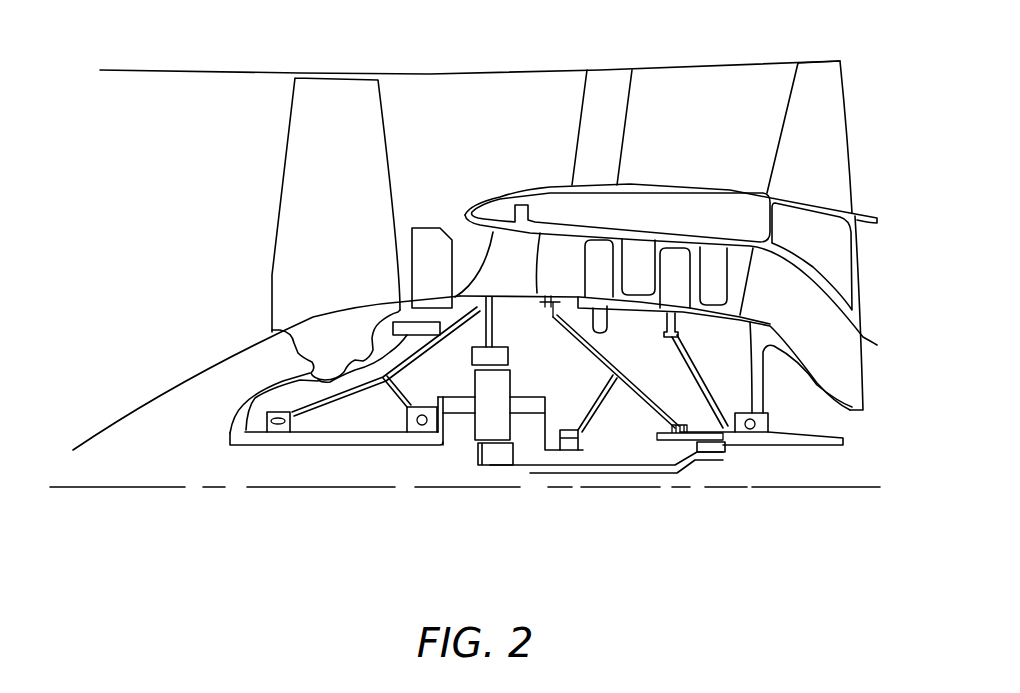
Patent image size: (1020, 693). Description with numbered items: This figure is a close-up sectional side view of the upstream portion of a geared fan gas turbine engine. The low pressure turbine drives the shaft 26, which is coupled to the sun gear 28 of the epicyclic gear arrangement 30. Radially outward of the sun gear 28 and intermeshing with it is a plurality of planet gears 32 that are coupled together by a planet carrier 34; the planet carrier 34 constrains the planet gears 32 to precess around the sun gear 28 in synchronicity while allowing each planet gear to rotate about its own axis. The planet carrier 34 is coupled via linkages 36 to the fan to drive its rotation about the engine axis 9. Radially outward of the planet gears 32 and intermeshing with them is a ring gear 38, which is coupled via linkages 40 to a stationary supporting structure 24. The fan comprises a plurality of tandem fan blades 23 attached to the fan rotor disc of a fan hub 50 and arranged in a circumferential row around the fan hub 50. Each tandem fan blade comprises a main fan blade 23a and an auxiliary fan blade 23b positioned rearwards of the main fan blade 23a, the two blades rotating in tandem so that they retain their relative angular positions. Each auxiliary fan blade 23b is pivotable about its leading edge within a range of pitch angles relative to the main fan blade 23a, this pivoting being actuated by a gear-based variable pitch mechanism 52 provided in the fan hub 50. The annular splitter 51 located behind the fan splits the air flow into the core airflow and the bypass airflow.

The engine axis 9 is at (165, 488).
The tandem fan blades 23 is at (170, 185).
The main fan blade 23a is at (308, 203).
The auxiliary fan blade 23b is at (418, 250).
The stationary supporting structure 24 is at (521, 272).
The shaft 26 is at (620, 468).
The sun gear 28 is at (492, 458).
The epicyclic gear arrangement 30 is at (462, 437).
The planet gears 32 is at (482, 428).
The planet carrier 34 is at (543, 423).
The linkages 36 is at (452, 434).
The ring gear 38 is at (497, 355).
The linkages 40 is at (494, 326).
The fan hub 50 is at (335, 348).
The annular splitter 51 is at (467, 213).
The gear-based variable pitch mechanism 52 is at (313, 363).